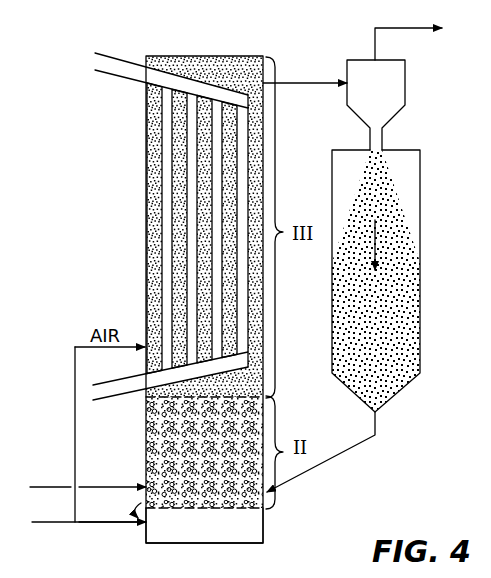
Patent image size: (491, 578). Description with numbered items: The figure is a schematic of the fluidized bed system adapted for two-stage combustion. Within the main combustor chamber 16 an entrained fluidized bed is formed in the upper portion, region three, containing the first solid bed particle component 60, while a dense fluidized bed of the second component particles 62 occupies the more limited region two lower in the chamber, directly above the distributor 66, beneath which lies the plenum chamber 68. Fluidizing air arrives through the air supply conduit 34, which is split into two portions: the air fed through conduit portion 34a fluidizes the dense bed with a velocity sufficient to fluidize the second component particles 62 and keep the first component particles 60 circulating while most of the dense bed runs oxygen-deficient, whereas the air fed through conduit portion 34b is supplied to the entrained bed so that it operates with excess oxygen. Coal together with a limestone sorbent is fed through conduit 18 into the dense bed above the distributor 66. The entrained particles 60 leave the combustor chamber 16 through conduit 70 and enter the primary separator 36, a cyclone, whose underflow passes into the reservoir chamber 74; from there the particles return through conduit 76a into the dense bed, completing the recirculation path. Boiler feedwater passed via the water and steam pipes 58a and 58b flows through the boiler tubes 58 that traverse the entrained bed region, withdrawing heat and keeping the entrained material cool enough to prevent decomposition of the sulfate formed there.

The main combustor chamber 16 is at (147, 153).
The conduit 18 is at (40, 487).
The fluidizing air supply conduit 34 is at (55, 523).
The conduit portion 34a is at (112, 523).
The conduit portion 34b is at (75, 457).
The primary separator 36 is at (388, 94).
The boiler tubes 58 is at (183, 226).
The water pipe 58a is at (115, 393).
The steam pipe 58b is at (110, 55).
The first solid bed particle component 60 is at (152, 117).
The second solid bed particle component particles 62 is at (157, 458).
The distributor 66 is at (212, 510).
The plenum chamber 68 is at (193, 533).
The conduit 70 is at (290, 83).
The reservoir chamber 74 is at (420, 202).
The conduit 76a is at (328, 462).